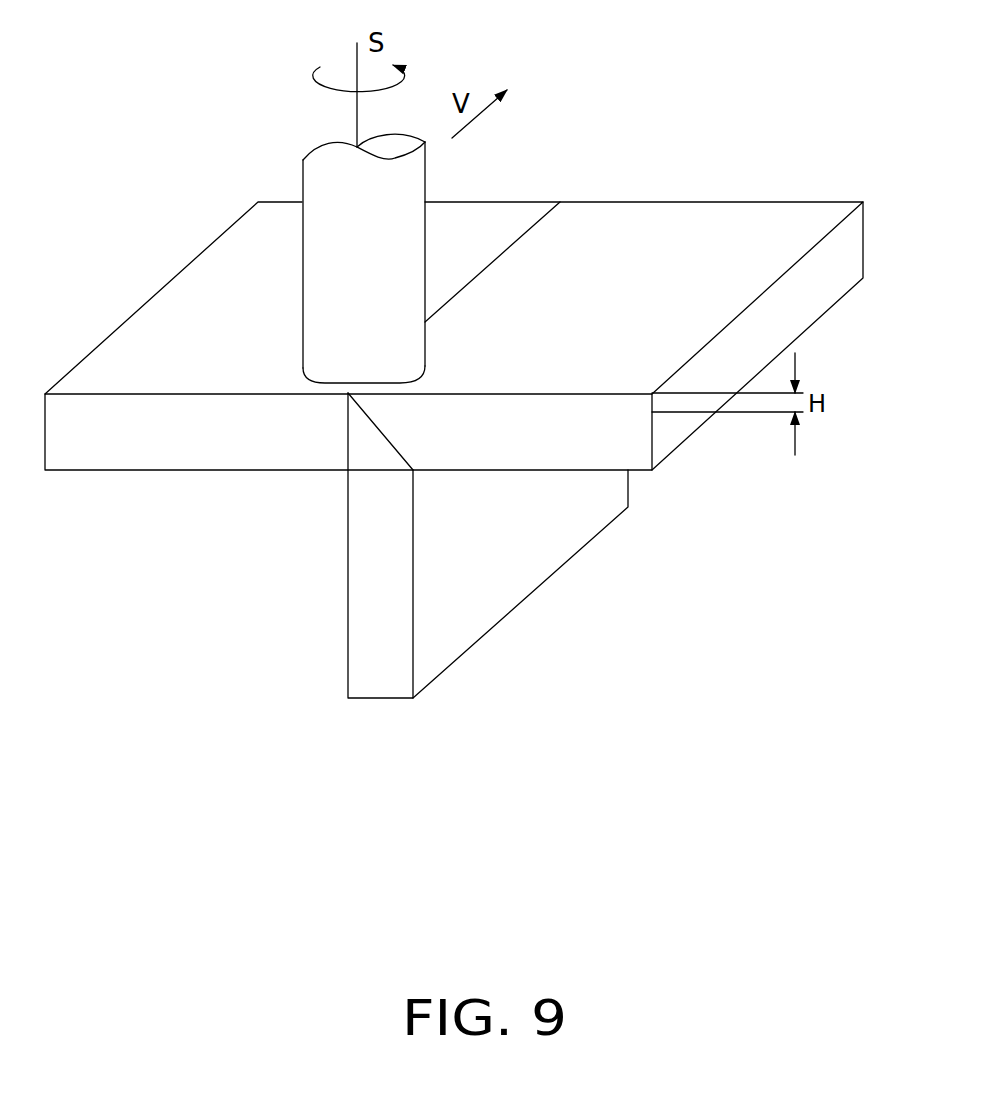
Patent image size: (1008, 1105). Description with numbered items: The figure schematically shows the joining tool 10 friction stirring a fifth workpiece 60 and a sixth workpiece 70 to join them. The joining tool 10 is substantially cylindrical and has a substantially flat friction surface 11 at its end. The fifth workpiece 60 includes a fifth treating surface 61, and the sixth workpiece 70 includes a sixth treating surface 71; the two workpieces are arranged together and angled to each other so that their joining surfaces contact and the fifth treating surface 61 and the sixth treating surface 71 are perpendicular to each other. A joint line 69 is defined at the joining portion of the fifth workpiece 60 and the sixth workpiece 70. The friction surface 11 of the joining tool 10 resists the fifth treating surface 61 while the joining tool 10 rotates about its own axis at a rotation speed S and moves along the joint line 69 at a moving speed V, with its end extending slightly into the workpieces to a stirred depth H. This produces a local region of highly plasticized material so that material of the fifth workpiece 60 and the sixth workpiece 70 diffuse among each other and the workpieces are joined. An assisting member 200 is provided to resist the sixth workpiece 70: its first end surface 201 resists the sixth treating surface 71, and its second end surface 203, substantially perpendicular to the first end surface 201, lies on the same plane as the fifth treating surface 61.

The joining tool 10 is at (325, 190).
The friction surface 11 is at (313, 389).
The fifth workpiece 60 is at (840, 268).
The fifth treating surface 61 is at (693, 223).
The joint line 69 is at (538, 218).
The sixth workpiece 70 is at (395, 632).
The sixth treating surface 71 is at (347, 645).
The assisting member 200 is at (128, 432).
The first end surface 201 is at (350, 445).
The second end surface 203 is at (218, 287).